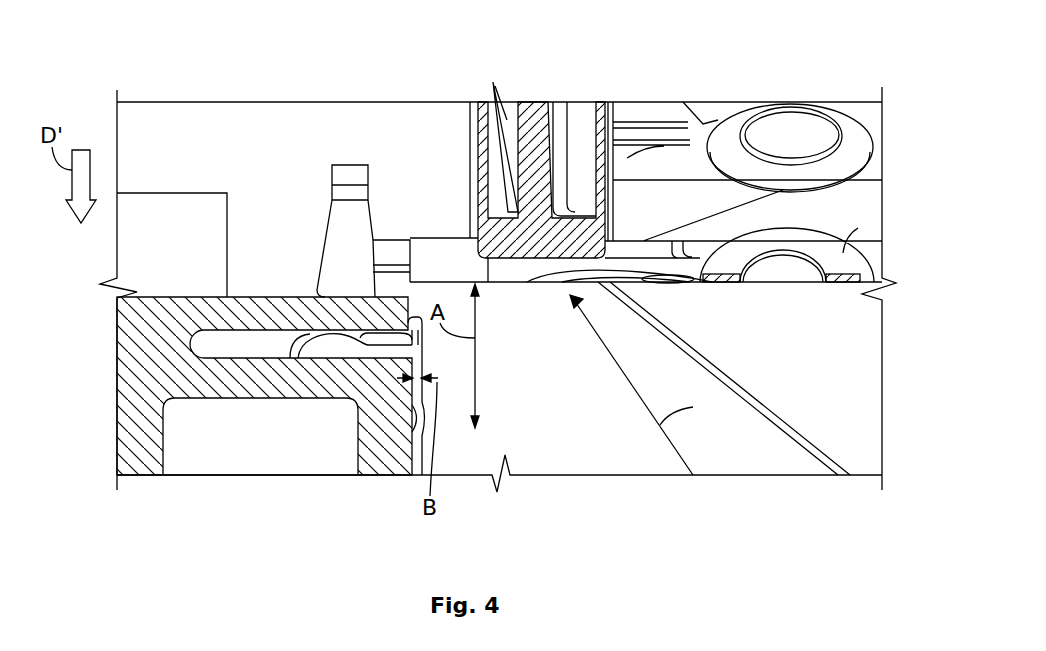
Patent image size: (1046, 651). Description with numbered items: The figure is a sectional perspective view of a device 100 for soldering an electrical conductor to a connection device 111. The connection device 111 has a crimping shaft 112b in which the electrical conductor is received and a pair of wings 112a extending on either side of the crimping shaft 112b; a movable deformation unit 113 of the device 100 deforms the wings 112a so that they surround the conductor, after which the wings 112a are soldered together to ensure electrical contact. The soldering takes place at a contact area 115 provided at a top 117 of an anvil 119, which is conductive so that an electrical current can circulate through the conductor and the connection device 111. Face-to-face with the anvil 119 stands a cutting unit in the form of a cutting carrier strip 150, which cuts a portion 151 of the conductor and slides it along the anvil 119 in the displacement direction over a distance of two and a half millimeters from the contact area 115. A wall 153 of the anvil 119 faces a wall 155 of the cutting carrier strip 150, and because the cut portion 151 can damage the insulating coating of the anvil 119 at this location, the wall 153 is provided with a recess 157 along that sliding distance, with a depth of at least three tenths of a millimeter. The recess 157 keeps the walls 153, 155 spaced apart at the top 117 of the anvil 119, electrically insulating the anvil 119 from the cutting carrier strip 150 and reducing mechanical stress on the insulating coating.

The device for soldering 100 is at (814, 55).
The connection device 111 is at (863, 140).
The wings 112a is at (637, 247).
The crimping shaft 112b is at (582, 175).
The movable deformation unit 113 is at (606, 167).
The contact area 115 is at (558, 285).
The top of the anvil 117 is at (570, 345).
The anvil 119 is at (843, 407).
The cutting carrier strip 150 is at (155, 313).
The cut portion of the electrical conductor 151 is at (308, 338).
The wall of the anvil 153 is at (418, 440).
The wall of the cutting carrier strip 155 is at (420, 425).
The recess 157 is at (423, 337).